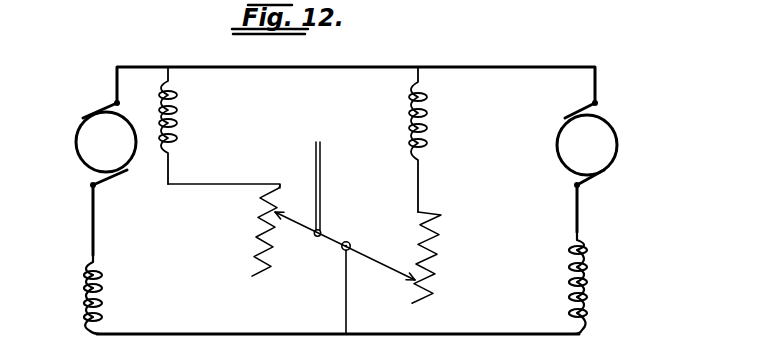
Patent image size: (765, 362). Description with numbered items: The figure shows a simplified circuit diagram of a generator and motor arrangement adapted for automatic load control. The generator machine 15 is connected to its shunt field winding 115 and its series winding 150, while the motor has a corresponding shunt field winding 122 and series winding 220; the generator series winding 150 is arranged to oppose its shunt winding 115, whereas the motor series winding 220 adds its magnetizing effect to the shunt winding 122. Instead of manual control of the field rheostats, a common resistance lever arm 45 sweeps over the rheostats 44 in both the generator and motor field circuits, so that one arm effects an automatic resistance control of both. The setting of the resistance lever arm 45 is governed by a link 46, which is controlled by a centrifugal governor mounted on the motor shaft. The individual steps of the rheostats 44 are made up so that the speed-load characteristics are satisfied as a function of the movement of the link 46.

The dynamo-electric machine 15 is at (93, 157).
The generator shunt field winding 115 is at (179, 126).
The motor shunt field winding 122 is at (432, 115).
The generator series winding 150 is at (103, 288).
The motor series winding 220 is at (595, 296).
The rheostat 44 is at (253, 240).
The resistance lever arm 45 is at (305, 227).
The link 46 is at (321, 191).